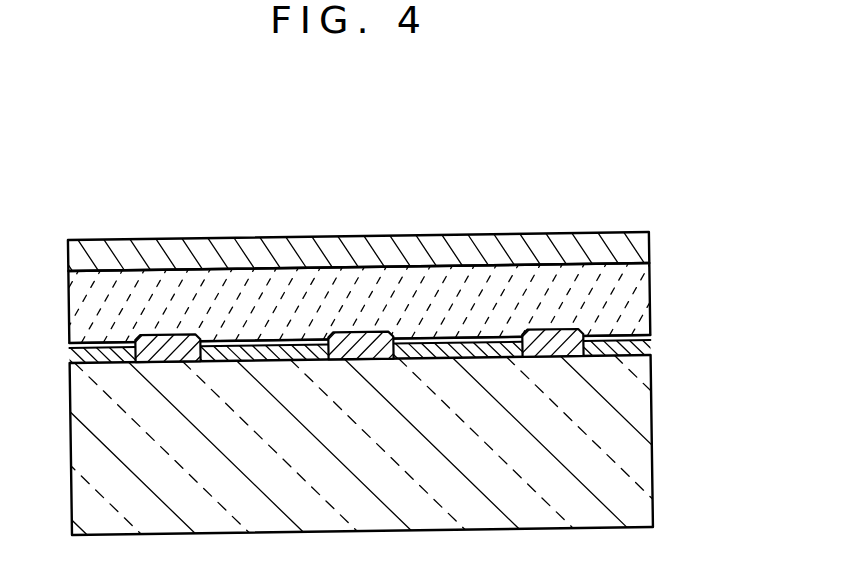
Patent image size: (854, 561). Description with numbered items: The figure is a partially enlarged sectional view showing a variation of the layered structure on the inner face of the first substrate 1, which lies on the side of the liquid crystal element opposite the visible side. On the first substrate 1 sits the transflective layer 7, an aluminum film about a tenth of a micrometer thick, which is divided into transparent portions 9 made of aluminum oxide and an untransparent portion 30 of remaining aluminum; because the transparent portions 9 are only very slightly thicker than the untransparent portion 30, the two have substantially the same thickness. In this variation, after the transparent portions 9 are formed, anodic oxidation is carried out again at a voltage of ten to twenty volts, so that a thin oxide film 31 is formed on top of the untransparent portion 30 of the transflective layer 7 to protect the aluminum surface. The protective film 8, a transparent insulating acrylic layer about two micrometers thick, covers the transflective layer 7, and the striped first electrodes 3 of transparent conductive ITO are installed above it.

The first substrate 1 is at (633, 432).
The first electrodes 3 is at (648, 250).
The transflective layer 7 is at (208, 332).
The protective film 8 is at (642, 300).
The transparent portions 9 is at (360, 336).
The untransparent portion 30 is at (458, 332).
The thin oxide film 31 is at (260, 343).